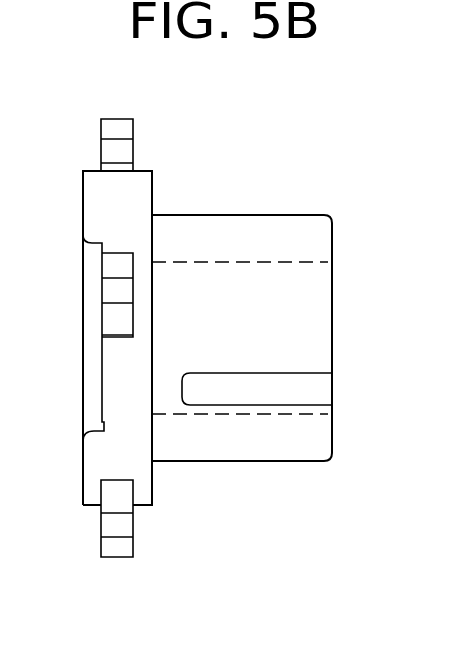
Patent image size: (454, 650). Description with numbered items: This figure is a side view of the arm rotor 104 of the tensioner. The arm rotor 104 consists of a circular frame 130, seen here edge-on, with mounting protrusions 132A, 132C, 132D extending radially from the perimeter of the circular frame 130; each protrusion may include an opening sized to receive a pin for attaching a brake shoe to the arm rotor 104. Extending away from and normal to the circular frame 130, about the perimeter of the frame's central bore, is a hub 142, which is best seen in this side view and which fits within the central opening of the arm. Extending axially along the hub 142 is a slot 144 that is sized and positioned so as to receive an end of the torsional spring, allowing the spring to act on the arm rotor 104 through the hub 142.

The arm rotor 104 is at (298, 180).
The circular frame 130 is at (130, 447).
The mounting protrusion 132A is at (120, 558).
The mounting protrusion 132C is at (134, 136).
The mounting protrusion 132D is at (133, 303).
The hub 142 is at (242, 461).
The slot 144 is at (280, 390).